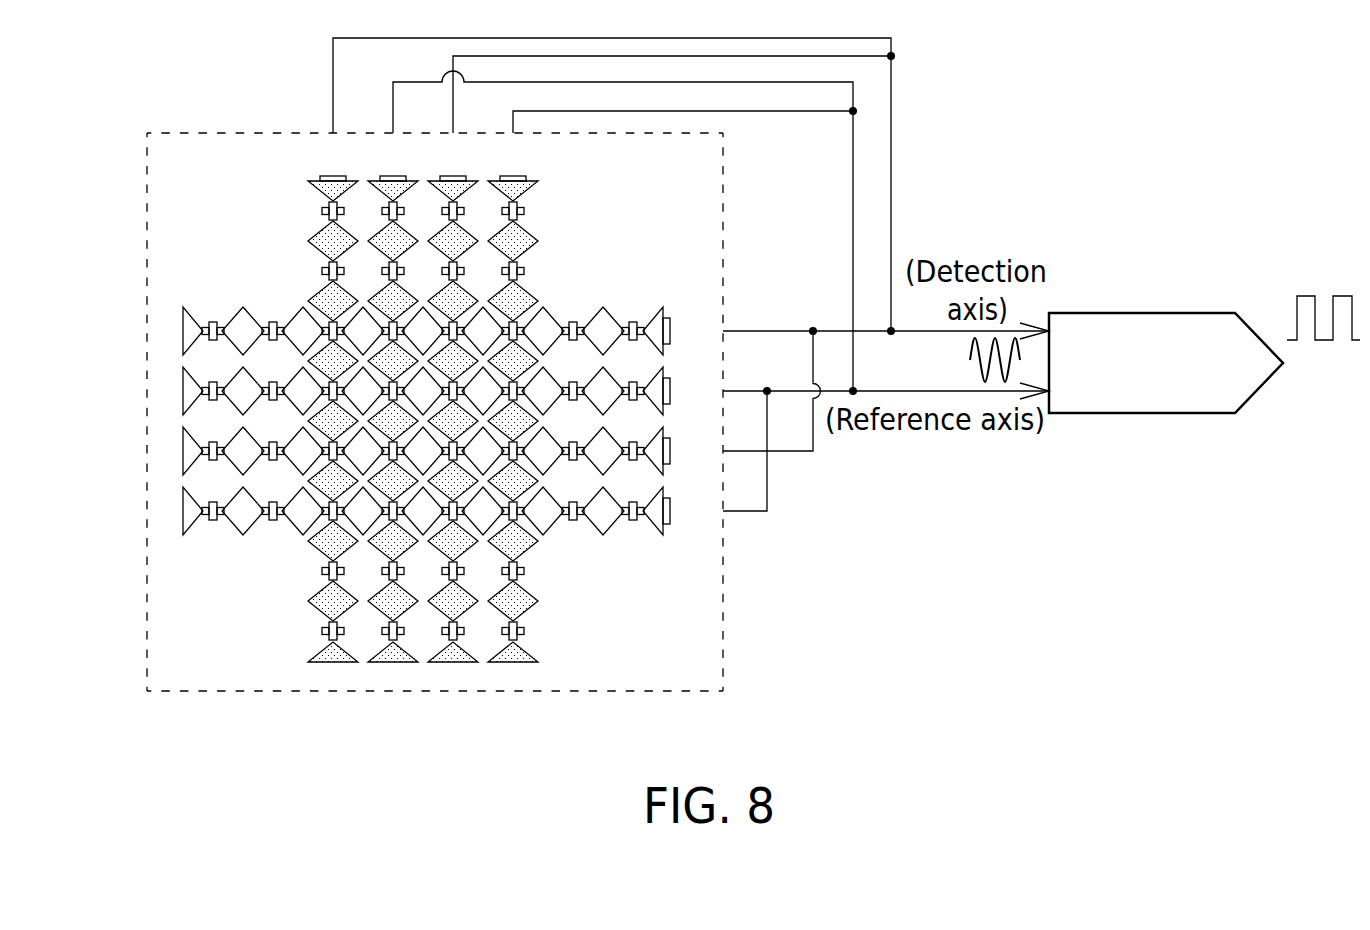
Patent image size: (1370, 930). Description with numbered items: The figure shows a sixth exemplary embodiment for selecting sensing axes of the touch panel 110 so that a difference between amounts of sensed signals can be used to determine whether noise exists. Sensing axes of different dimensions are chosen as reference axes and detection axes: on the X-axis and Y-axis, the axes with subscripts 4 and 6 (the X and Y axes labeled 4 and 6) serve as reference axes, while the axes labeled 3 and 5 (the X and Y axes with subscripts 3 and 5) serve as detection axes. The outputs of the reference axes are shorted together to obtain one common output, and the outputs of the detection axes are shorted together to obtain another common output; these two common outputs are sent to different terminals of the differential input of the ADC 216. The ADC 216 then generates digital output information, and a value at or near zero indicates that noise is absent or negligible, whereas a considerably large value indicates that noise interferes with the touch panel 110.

The touch panel 110 is at (147, 412).
The ADC 216 is at (1140, 312).
The electrode X3 / Y3 3 is at (443, 402).
The electrode X4 / Y4 4 is at (443, 402).
The electrode X5 / Y5 5 is at (443, 402).
The electrode X6 / Y6 6 is at (443, 402).